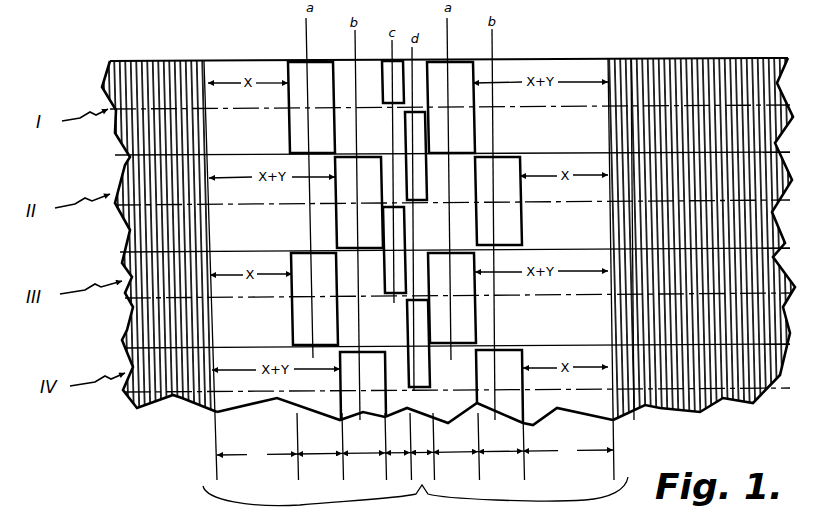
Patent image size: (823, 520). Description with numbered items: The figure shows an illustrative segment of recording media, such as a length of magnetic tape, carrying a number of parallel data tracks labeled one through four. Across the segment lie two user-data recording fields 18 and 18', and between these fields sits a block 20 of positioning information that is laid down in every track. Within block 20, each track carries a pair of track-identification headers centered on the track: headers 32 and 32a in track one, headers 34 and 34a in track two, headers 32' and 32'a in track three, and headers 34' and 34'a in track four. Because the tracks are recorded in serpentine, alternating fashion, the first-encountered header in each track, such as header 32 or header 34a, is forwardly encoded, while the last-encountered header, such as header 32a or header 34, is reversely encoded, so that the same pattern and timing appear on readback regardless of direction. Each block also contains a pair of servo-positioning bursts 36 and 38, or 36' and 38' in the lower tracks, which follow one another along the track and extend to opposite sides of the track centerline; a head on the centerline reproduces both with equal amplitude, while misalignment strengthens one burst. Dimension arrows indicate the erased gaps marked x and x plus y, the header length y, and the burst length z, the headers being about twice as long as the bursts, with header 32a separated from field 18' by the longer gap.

The user-data recording field 18 is at (159, 251).
The user-data recording field 18' is at (701, 248).
The block of positioning information 20 is at (415, 466).
The track-identification header 32 is at (311, 107).
The track-identification header 32a is at (467, 99).
The track-identification header 32' is at (314, 299).
The track-identification header 32'a is at (452, 298).
The track-identification header 34 is at (359, 202).
The track-identification header 34a is at (512, 196).
The track-identification header 34' is at (363, 386).
The track-identification header 34'a is at (499, 386).
The servo-positioning burst 36 is at (373, 82).
The servo-positioning burst 36' is at (415, 250).
The servo-positioning burst 38 is at (397, 156).
The servo-positioning burst 38' is at (400, 343).